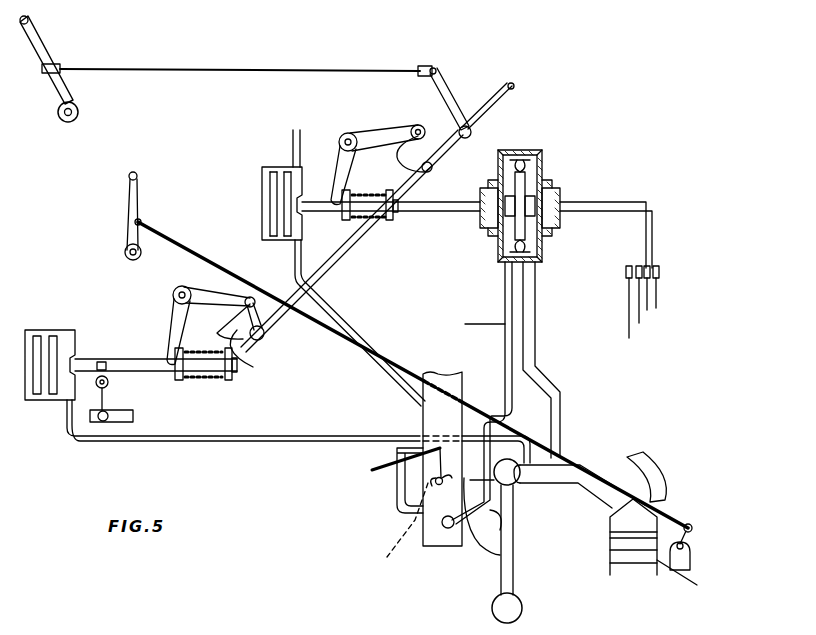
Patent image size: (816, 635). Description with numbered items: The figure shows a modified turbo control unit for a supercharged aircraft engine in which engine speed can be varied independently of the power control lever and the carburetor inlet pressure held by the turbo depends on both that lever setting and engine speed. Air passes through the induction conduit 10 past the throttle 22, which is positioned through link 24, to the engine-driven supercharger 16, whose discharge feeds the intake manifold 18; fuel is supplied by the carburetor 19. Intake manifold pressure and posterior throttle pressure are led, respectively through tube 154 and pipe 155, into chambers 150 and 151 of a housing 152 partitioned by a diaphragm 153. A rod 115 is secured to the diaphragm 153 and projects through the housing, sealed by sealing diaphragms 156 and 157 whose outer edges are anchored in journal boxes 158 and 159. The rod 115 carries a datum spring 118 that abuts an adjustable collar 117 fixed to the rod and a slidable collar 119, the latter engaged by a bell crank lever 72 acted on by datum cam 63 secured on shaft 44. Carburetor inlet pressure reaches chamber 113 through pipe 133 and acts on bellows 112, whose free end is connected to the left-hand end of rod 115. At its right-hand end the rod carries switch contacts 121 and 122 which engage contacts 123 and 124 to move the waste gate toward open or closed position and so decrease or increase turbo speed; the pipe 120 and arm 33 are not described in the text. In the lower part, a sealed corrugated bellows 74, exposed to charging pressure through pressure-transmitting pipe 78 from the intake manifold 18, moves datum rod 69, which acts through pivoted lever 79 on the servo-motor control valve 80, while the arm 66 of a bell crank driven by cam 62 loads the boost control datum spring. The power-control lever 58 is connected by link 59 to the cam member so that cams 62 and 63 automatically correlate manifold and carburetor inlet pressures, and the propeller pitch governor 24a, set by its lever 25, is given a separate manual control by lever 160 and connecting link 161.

The control lever 58 is at (44, 48).
The link 59 is at (158, 68).
The datum cam 63 is at (422, 147).
The shaft 44 is at (516, 90).
The bell crank lever 72 is at (338, 168).
The datum spring 118 is at (342, 250).
The chamber 113 is at (262, 170).
The bellows 112 is at (262, 220).
The rod 115 is at (428, 205).
The slidable collar 119 is at (345, 214).
The adjustable collar 117 is at (395, 216).
The chamber 150 is at (545, 157).
The chamber 151 is at (500, 158).
The housing 152 is at (506, 153).
The sealing diaphragm 156 is at (478, 214).
The sealing diaphragm 157 is at (560, 196).
The journal box 158 is at (487, 230).
The journal box 159 is at (560, 224).
The pipe 120 is at (650, 212).
The switch contact 121 is at (638, 270).
The switch contact 122 is at (651, 272).
The contact 123 is at (627, 274).
The contact 124 is at (658, 274).
The diaphragm 153 is at (503, 266).
The tube or pipe 154 is at (540, 300).
The pipe or tube 155 is at (466, 324).
The connecting link 161 is at (215, 258).
The lever 160 is at (138, 200).
The sealed corrugated bellows 74 is at (44, 330).
The datum rod 69 is at (117, 357).
The arm 66 is at (170, 314).
The cam 62 is at (252, 338).
The pivoted lever 79 is at (110, 392).
The servo-motor control valve 80 is at (135, 415).
The pressure-transmitting pipe 78 is at (215, 442).
The tube or pipe 133 is at (326, 303).
The induction conduit 10 is at (452, 372).
The link 24 is at (346, 470).
The carburetor 19 is at (382, 462).
The throttle 22 is at (400, 529).
The supercharger 16 is at (514, 548).
The intake manifold 18 is at (567, 476).
The curved arm 33 is at (652, 463).
The propeller pitch governor 24a is at (690, 566).
The lever 25 is at (692, 546).